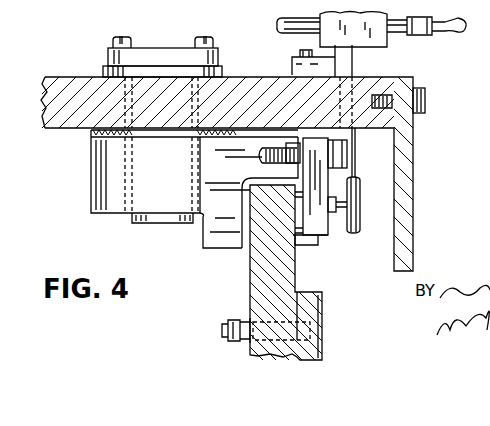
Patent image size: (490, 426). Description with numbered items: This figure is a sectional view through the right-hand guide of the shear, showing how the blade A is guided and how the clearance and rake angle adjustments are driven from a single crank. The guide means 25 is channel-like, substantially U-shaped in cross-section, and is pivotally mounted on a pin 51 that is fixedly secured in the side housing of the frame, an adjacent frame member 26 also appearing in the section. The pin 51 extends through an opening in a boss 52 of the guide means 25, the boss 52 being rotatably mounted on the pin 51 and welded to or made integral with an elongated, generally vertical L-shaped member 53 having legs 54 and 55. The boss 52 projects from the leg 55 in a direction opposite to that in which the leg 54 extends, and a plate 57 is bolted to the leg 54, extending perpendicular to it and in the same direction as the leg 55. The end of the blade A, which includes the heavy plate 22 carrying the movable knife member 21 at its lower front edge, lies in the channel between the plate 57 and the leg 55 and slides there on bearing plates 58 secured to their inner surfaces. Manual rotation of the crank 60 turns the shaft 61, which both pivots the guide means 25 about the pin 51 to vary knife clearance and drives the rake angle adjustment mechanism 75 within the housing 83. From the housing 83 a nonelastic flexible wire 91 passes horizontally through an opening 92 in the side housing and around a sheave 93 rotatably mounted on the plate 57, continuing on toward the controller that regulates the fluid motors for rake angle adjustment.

The guide means 25 is at (78, 164).
The boss 52 is at (91, 190).
The pin 51 is at (137, 222).
The L-shaped member 53 is at (213, 198).
The leg 55 is at (216, 249).
The leg 54 is at (288, 118).
The plate 57 is at (328, 176).
The plates 58 is at (318, 242).
The sheave 93 is at (360, 205).
The flexible wire 91 is at (353, 62).
The opening 92 is at (236, 74).
The housing 83 is at (320, 44).
The shaft 61 is at (278, 18).
The rake angle adjustment mechanism 75 is at (392, 40).
The crank 60 is at (446, 33).
The upright member 26 is at (413, 162).
The blade A is at (322, 276).
The movable knife member 21 is at (320, 295).
The plate 22 is at (245, 312).